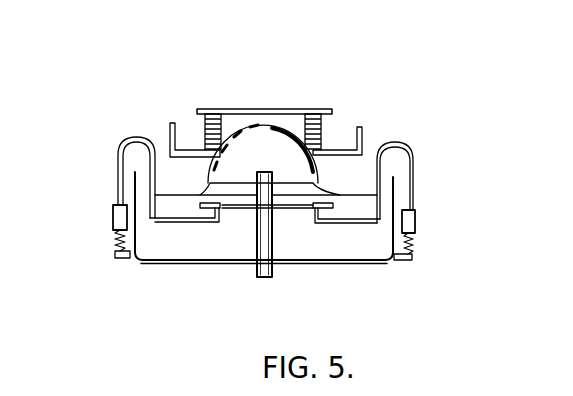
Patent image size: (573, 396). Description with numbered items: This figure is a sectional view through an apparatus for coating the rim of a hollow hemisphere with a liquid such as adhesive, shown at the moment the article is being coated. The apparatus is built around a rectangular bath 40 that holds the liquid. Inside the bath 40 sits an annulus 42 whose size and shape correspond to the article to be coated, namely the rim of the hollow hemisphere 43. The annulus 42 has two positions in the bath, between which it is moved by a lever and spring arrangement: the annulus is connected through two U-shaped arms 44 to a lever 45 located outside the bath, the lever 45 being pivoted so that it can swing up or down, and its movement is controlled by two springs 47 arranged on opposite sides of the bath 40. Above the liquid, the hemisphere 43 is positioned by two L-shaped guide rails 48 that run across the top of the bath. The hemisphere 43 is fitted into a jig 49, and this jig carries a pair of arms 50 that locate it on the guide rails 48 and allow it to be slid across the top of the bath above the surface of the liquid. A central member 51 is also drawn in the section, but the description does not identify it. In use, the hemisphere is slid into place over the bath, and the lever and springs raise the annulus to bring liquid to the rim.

The bath 40 is at (382, 268).
The annulus 42 is at (200, 207).
The hollow hemisphere 43 is at (274, 130).
The U-shaped arms 44 is at (118, 172).
The lever 45 is at (116, 220).
The springs 47 is at (113, 247).
The L-shaped guide rails 48 is at (170, 123).
The jig 49 is at (302, 110).
The arms 50 is at (188, 150).
The rod 51 is at (272, 271).